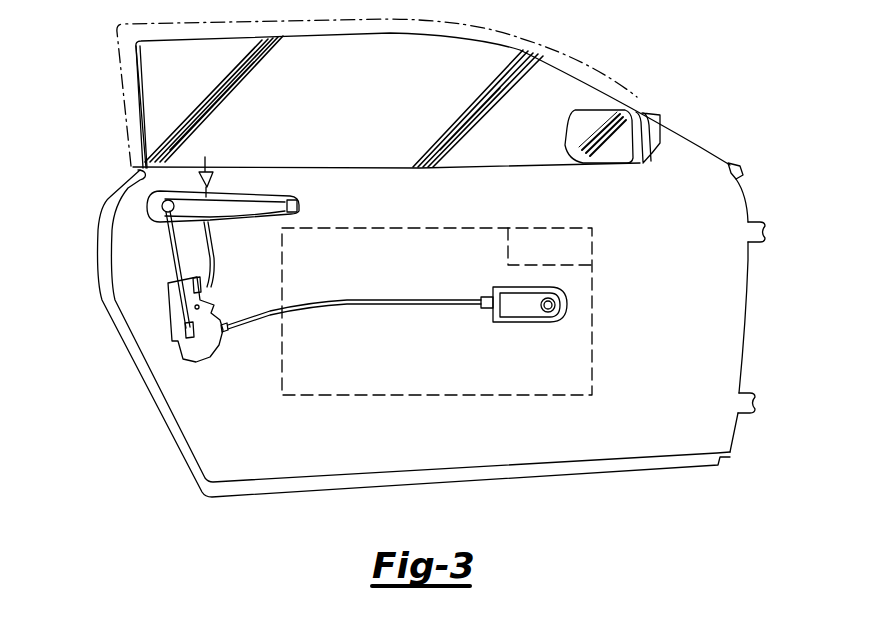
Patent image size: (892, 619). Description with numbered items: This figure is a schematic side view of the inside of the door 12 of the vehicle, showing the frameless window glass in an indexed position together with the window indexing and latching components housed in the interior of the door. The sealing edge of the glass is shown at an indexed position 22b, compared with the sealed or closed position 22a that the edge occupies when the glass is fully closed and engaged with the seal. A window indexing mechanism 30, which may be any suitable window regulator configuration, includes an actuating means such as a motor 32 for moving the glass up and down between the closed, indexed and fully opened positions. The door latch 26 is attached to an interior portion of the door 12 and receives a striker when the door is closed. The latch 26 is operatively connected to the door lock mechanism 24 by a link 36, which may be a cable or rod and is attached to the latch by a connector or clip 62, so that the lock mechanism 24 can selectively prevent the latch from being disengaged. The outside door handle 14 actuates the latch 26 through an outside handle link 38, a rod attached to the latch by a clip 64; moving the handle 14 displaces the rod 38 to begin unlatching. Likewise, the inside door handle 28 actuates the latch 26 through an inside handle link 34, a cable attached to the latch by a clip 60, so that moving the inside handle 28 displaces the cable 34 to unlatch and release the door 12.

The door 12 is at (767, 168).
The outside door handle 14 is at (260, 198).
The closed position of the sealing edge 22a is at (127, 98).
The indexed position of the sealing edge 22b is at (140, 110).
The door lock mechanism 24 is at (205, 157).
The door latch 26 is at (183, 358).
The inside door handle 28 is at (523, 302).
The window indexing mechanism 30 is at (445, 397).
The motor 32 is at (572, 243).
The inside handle link 34 is at (297, 310).
The link 36 is at (213, 247).
The outside handle link 38 is at (170, 252).
The clip 60 is at (225, 327).
The clip 62 is at (207, 288).
The clip 64 is at (186, 332).